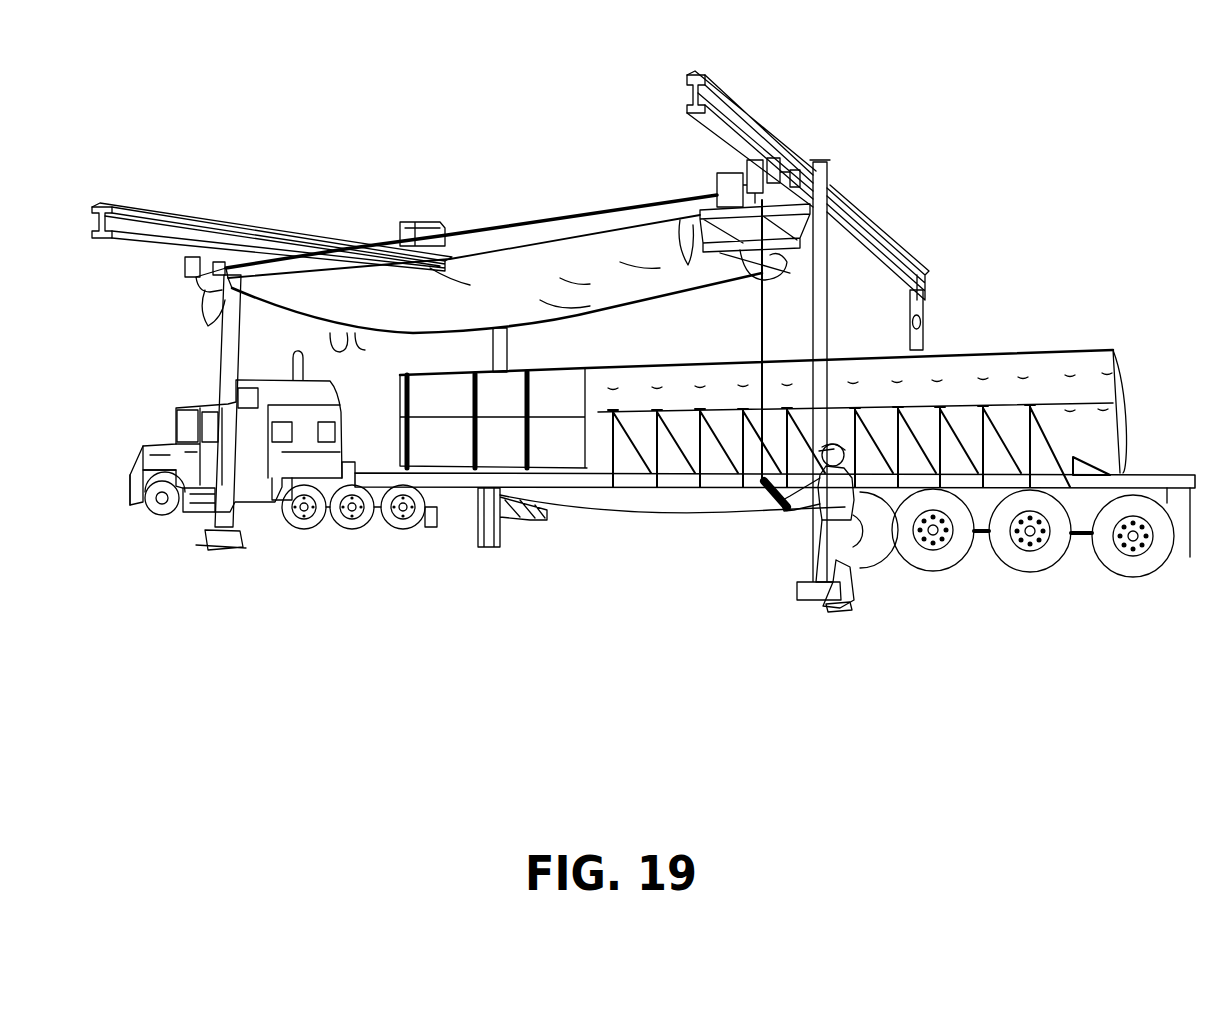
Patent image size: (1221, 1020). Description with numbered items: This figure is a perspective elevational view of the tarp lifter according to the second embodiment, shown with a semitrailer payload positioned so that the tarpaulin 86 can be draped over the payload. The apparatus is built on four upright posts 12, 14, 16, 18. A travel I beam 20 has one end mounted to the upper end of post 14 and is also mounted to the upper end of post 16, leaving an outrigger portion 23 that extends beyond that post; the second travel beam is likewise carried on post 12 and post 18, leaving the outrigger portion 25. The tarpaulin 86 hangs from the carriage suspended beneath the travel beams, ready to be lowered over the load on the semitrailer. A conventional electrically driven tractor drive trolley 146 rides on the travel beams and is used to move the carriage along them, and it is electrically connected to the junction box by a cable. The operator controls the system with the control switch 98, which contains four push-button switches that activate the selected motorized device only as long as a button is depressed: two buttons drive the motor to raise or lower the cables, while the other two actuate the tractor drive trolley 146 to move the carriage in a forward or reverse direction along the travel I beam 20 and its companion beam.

The upright post 12 is at (920, 338).
The upright post 14 is at (507, 343).
The upright post 16 is at (230, 362).
The upright post 18 is at (825, 337).
The travel I beam 20 is at (857, 222).
The outrigger portion 23 is at (742, 120).
The outrigger portion 25 is at (140, 225).
The tarpaulin 86 is at (465, 253).
The control switch 98 is at (777, 512).
The tractor drive trolley 146 is at (752, 173).